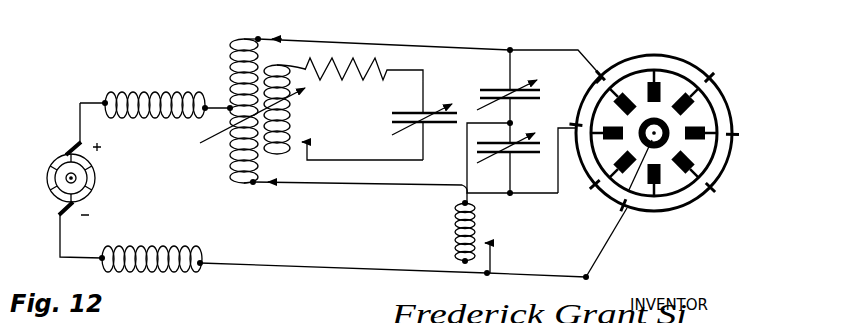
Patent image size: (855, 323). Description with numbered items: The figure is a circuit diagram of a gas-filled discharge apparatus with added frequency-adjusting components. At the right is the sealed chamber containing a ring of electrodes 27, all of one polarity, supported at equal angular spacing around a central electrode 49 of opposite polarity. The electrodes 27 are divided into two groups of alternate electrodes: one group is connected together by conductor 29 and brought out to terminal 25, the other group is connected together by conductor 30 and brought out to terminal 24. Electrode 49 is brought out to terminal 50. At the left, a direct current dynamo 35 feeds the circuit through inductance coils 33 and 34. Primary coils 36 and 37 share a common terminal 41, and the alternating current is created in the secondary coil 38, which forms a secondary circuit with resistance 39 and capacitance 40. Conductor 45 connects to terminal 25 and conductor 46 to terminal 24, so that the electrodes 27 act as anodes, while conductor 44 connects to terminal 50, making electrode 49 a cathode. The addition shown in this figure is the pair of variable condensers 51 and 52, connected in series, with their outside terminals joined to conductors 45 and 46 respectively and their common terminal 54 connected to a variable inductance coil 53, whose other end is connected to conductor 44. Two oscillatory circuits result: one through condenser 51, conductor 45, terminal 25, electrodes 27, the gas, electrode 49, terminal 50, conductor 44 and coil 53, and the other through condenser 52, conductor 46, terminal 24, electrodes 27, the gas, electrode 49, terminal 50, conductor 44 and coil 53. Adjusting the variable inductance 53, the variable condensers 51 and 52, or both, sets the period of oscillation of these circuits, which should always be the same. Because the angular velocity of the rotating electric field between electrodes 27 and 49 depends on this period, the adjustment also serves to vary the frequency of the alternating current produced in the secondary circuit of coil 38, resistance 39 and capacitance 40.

The terminal 24 is at (563, 128).
The terminal 25 is at (600, 71).
The electrodes 27 is at (677, 105).
The conductor 29 is at (731, 96).
The conductor 30 is at (725, 117).
The inductance coil 33 is at (146, 92).
The inductance coil 34 is at (147, 247).
The direct current dynamo 35 is at (97, 188).
The primary coil 36 is at (231, 63).
The primary coil 37 is at (230, 164).
The secondary coil 38 is at (291, 117).
The resistance 39 is at (373, 76).
The capacitance 40 is at (393, 116).
The common terminal 41 is at (228, 106).
The conductor 44 is at (349, 266).
The conductor 45 is at (447, 47).
The conductor 46 is at (376, 185).
The electrode 49 is at (669, 128).
The terminal 50 is at (605, 249).
The variable condenser 51 is at (492, 88).
The variable condenser 52 is at (529, 153).
The variable inductance coil 53 is at (454, 230).
The common terminal 54 is at (518, 124).